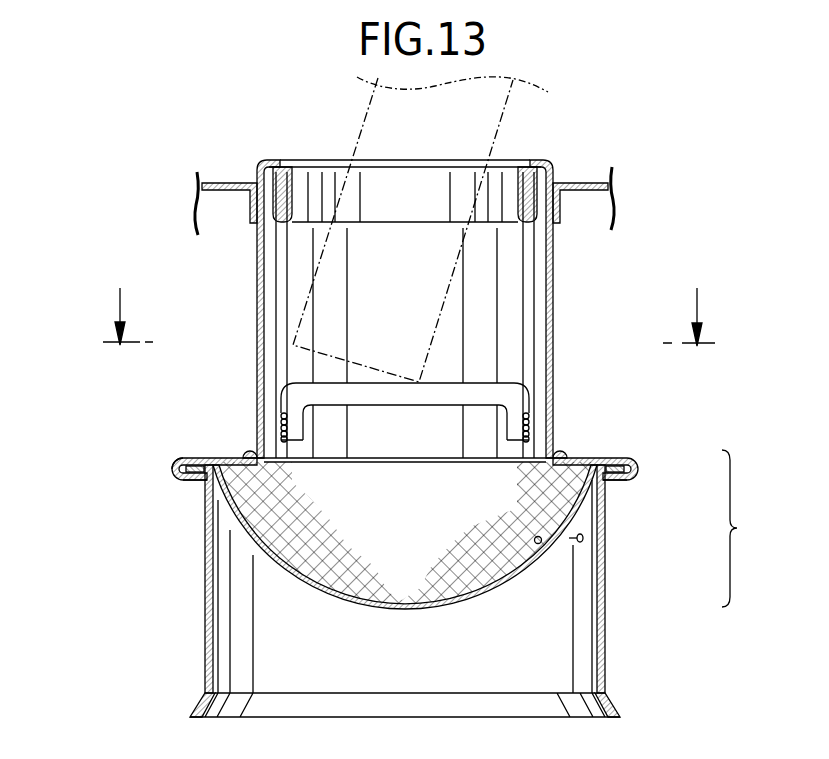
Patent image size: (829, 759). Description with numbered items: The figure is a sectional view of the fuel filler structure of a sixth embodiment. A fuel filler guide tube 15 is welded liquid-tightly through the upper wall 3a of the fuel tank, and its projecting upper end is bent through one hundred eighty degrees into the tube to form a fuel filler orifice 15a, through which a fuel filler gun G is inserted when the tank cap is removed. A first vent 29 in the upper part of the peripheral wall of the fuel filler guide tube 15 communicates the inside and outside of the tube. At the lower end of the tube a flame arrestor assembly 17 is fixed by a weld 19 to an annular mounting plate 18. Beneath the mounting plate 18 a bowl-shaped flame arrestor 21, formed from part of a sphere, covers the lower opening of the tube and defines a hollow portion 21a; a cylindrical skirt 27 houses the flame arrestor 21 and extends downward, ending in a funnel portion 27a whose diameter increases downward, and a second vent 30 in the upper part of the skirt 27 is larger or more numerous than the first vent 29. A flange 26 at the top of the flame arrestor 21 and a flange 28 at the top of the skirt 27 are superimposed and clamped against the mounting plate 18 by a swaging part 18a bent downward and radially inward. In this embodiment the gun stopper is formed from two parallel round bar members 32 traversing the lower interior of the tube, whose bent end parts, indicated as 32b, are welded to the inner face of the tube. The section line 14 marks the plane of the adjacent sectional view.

The fuel filler gun G is at (355, 132).
The section line for FIG. 14 is at (406, 314).
The fuel filler guide tube 15 is at (553, 337).
The fuel filler orifice 15a is at (524, 194).
The upper wall 3a is at (583, 184).
The first vent 29 is at (550, 247).
The round bar member 32 is at (372, 394).
The coil spring 32b is at (293, 430).
The flame arrestor assembly 17 is at (464, 382).
The weld 19 is at (558, 452).
The mounting plate 18 is at (613, 457).
The flange 26 is at (176, 458).
The flange 28 is at (186, 470).
The swaging part 18a is at (190, 481).
The skirt 27 is at (607, 627).
The funnel portion 27a is at (613, 697).
The flame arrestor 21 is at (540, 574).
The hollow portion 21a is at (420, 544).
The second vent 30 is at (514, 588).